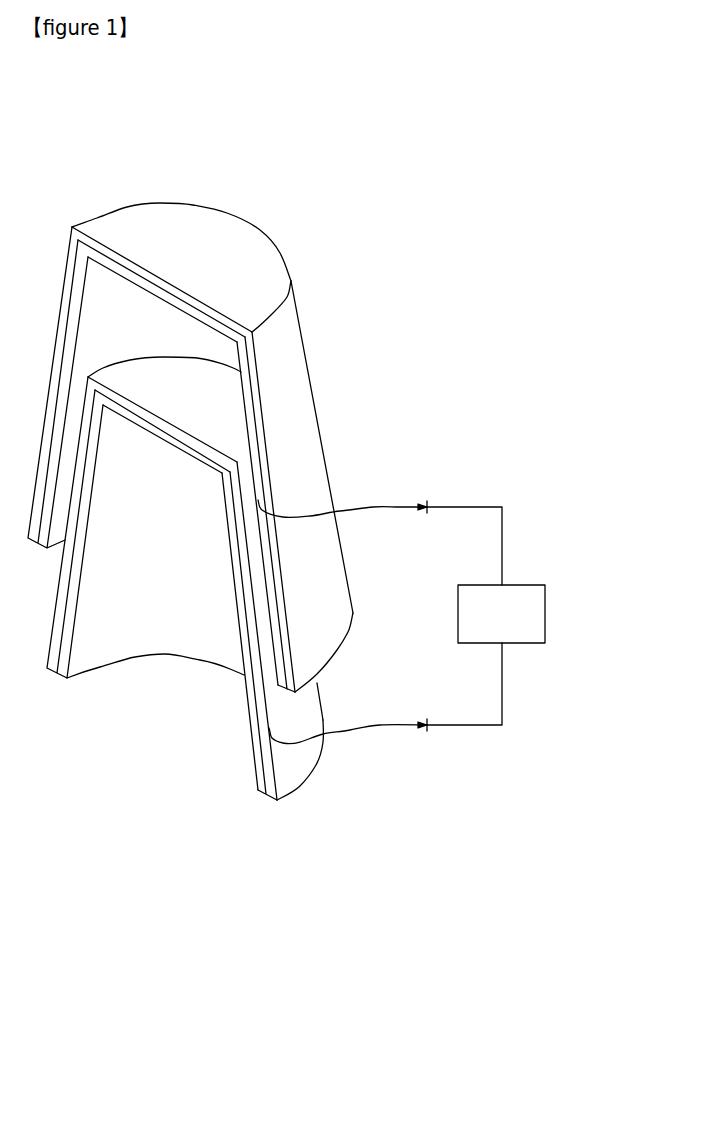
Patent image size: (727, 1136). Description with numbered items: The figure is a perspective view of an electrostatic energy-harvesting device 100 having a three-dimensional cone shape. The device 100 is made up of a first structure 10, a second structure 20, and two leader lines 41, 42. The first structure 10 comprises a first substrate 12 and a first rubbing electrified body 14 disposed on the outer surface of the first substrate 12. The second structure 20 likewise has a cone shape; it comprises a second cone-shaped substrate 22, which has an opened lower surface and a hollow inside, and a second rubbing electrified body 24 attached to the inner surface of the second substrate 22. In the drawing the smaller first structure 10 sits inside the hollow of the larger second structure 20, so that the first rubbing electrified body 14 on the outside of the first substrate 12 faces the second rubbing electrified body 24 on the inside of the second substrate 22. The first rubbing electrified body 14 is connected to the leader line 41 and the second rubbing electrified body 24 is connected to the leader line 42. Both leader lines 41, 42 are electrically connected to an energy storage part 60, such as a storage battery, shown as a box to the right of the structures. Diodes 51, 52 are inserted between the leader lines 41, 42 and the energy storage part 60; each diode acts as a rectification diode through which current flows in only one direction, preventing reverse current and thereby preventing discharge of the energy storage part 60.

The electrostatic energy-harvesting device 100 is at (342, 212).
The first structure 10 is at (186, 625).
The first substrate 12 is at (258, 755).
The first rubbing electrified body 14 is at (270, 773).
The second structure 20 is at (223, 447).
The second substrate 22 is at (261, 382).
The second rubbing electrified body 24 is at (243, 370).
The leader line 41 is at (366, 729).
The leader line 42 is at (373, 510).
The diode 51 is at (420, 733).
The diode 52 is at (423, 503).
The energy storage part 60 is at (528, 619).